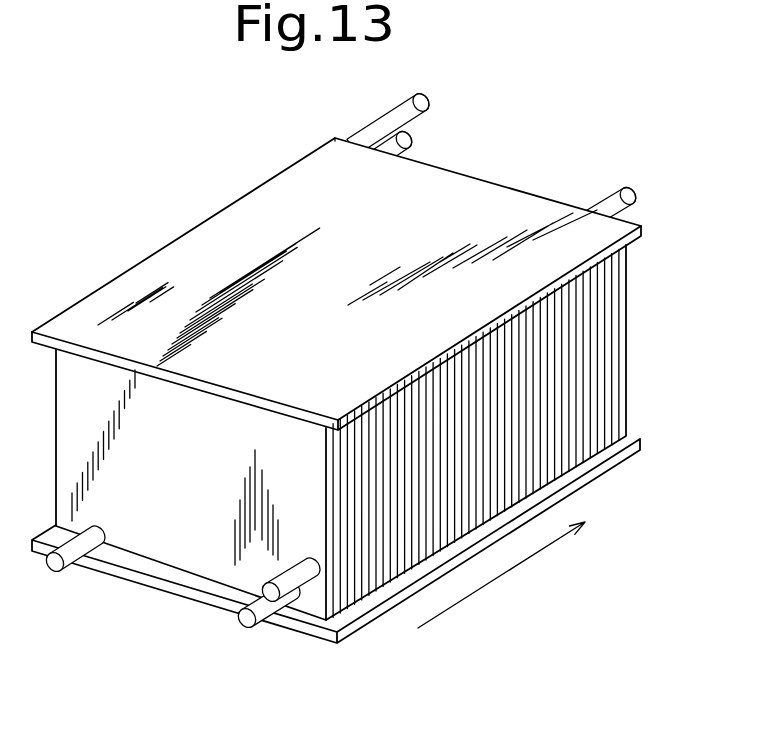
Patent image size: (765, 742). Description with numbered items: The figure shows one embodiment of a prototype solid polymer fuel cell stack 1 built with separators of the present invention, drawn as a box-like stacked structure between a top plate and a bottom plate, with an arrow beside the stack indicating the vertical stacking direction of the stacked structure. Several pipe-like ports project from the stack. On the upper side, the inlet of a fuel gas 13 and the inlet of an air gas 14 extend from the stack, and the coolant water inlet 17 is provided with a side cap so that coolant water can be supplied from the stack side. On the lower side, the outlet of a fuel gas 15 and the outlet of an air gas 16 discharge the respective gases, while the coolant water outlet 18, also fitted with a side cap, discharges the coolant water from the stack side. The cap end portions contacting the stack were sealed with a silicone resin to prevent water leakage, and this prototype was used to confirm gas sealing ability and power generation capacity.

The heat exchanger unit 1 is at (598, 367).
The inlet of a fuel gas 13 is at (413, 132).
The inlet of an air gas 14 is at (418, 105).
The outlet of a fuel gas 15 is at (263, 623).
The outlet of an air gas 16 is at (297, 578).
The coolant water inlet 17 is at (628, 195).
The coolant water outlet 18 is at (71, 566).